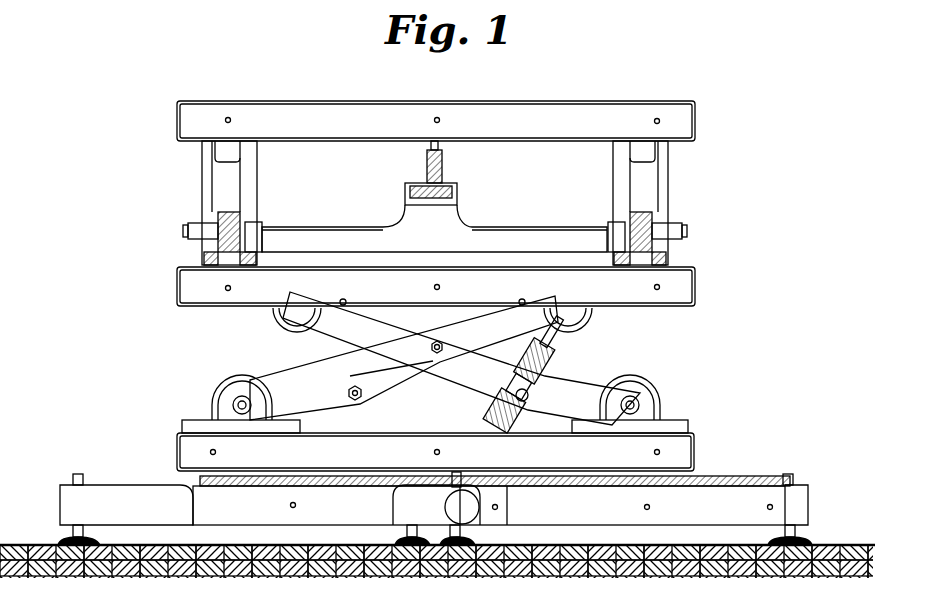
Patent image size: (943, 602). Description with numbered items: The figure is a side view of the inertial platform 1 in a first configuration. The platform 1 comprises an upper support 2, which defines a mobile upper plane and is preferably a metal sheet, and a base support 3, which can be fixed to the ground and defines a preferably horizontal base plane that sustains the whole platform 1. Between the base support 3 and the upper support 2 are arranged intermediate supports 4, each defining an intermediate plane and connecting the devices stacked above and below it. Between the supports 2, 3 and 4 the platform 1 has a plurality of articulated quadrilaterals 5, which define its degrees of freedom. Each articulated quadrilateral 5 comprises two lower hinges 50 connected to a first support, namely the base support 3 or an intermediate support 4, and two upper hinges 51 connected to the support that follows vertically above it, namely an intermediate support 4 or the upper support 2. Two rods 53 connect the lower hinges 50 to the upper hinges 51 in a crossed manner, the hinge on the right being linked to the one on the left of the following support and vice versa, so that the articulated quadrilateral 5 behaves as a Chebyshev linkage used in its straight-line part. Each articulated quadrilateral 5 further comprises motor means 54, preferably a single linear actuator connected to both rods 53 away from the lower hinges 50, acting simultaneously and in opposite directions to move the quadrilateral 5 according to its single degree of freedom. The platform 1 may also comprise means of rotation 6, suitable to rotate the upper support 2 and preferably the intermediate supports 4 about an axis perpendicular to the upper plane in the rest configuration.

The inertial platform 1 is at (118, 142).
The upper support 2 is at (709, 123).
The base support 3 is at (815, 507).
The intermediate support 4 is at (709, 279).
The articulated quadrilateral 5 is at (682, 196).
The means of rotation 6 is at (196, 484).
The lower hinge 50 is at (240, 405).
The upper hinge 51 is at (563, 296).
The rod 53 is at (250, 168).
The motor means 54 is at (547, 360).